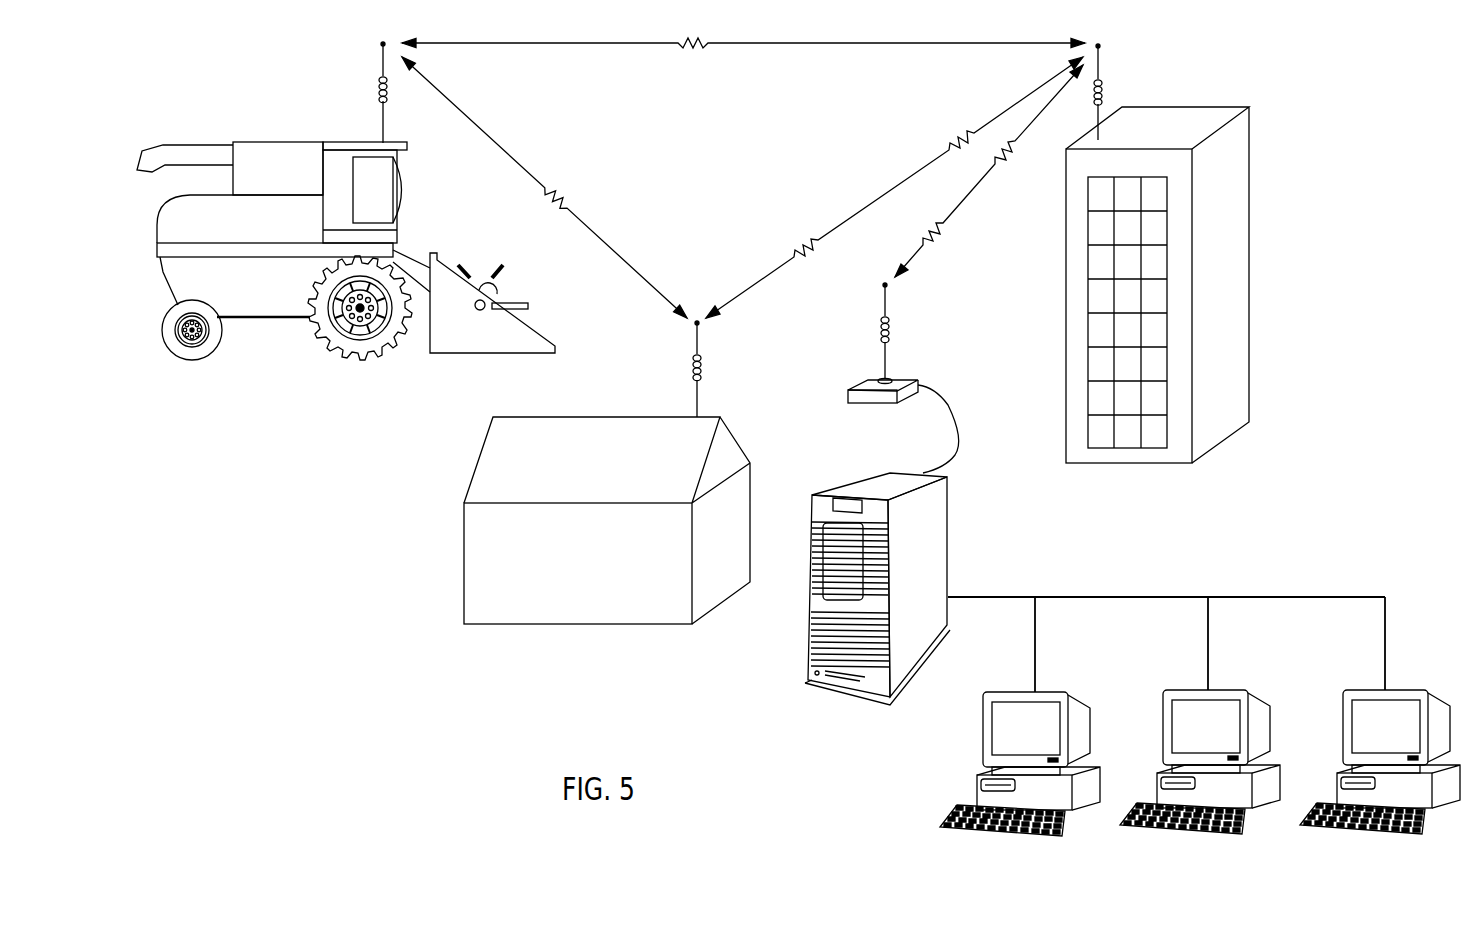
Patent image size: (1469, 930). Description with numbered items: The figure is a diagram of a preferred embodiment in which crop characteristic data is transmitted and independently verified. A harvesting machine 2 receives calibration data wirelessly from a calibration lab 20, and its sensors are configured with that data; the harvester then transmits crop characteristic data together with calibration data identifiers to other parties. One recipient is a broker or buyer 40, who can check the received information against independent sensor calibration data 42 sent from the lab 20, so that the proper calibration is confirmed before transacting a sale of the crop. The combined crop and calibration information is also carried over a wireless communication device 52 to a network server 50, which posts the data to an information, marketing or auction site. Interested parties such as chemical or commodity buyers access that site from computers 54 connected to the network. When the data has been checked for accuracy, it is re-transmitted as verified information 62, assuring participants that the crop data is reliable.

The harvesting machine 2 is at (310, 130).
The calibration lab 20 is at (470, 565).
The broker or buyer 40 is at (1230, 287).
The independent sensor calibration data 42 is at (873, 202).
The network server 50 is at (932, 557).
The wireless communication device 52 is at (845, 365).
The computers 54 is at (960, 732).
The verified information 62 is at (967, 198).